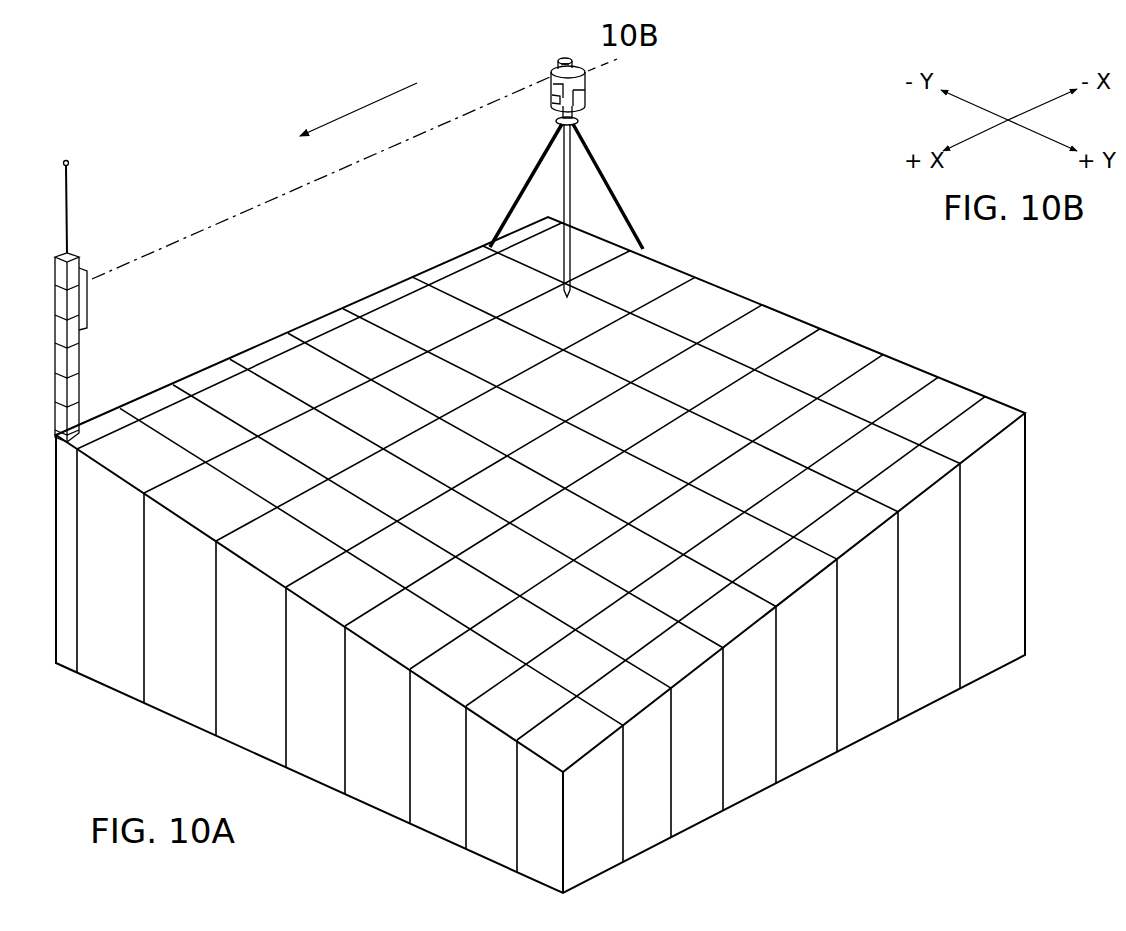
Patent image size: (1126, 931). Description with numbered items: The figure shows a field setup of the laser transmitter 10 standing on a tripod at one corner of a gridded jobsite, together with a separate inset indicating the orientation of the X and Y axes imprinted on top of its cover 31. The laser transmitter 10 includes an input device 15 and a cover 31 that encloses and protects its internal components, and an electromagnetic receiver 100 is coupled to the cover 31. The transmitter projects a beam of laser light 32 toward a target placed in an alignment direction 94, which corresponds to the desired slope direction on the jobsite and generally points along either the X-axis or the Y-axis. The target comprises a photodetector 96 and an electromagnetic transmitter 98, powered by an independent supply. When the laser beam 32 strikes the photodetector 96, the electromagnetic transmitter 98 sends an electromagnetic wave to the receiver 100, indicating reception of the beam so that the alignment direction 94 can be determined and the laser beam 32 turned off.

The laser transmitter 10 is at (589, 157).
The input device 15 is at (587, 106).
The cover 31 is at (558, 64).
The beam of laser light 32 is at (473, 108).
The alignment direction 94 is at (366, 104).
The photodetector 96 is at (87, 309).
The electromagnetic transmitter 98 is at (67, 218).
The electromagnetic receiver 100 is at (551, 98).